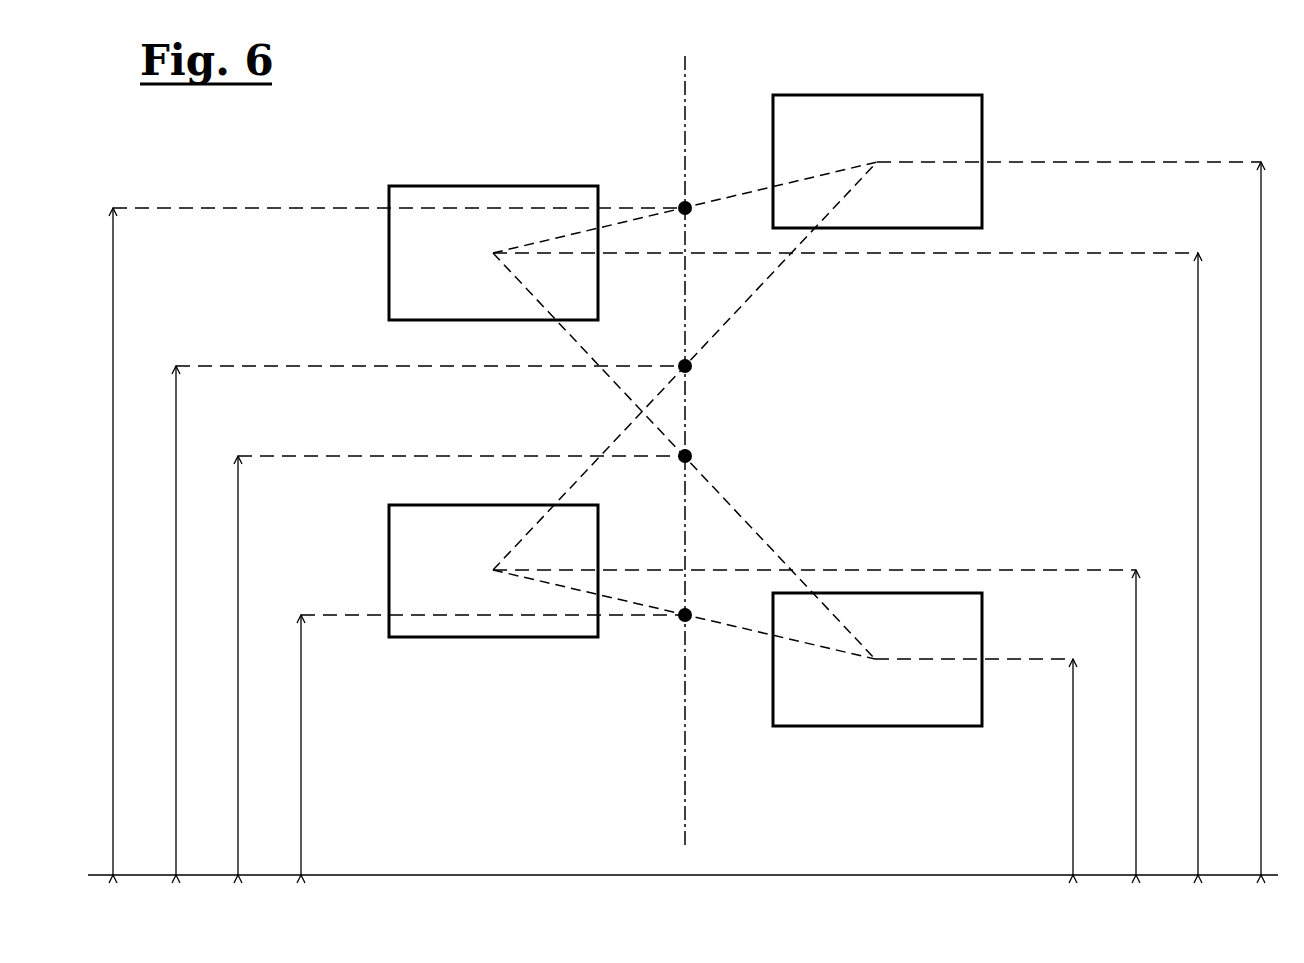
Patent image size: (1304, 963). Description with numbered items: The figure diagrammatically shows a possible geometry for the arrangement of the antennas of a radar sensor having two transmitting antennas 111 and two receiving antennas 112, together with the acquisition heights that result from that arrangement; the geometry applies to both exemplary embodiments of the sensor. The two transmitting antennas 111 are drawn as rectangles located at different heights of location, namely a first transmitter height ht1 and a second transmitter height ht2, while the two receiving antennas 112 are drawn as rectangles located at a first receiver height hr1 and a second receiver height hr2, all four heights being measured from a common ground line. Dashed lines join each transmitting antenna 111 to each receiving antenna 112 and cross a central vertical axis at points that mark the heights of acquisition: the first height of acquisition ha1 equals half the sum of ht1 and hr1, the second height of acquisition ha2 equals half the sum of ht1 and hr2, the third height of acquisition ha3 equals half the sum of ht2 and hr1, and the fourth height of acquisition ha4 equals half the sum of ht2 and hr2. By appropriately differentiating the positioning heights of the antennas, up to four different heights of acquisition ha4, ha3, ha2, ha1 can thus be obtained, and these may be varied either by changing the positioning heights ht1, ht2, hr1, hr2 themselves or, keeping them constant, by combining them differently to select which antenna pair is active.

The transmitting antenna 111 is at (469, 181).
The receiving antenna 112 is at (847, 85).
The first height of acquisition ha1 is at (493, 745).
The second height of acquisition ha2 is at (461, 665).
The third height of acquisition ha3 is at (430, 620).
The fourth height of acquisition ha4 is at (399, 541).
The height of location of first transmitting antenna ht1 is at (994, 767).
The height of location of second transmitting antenna ht2 is at (865, 564).
The height of location of first receiving antenna hr1 is at (834, 722).
The height of location of second receiving antenna hr2 is at (1089, 518).